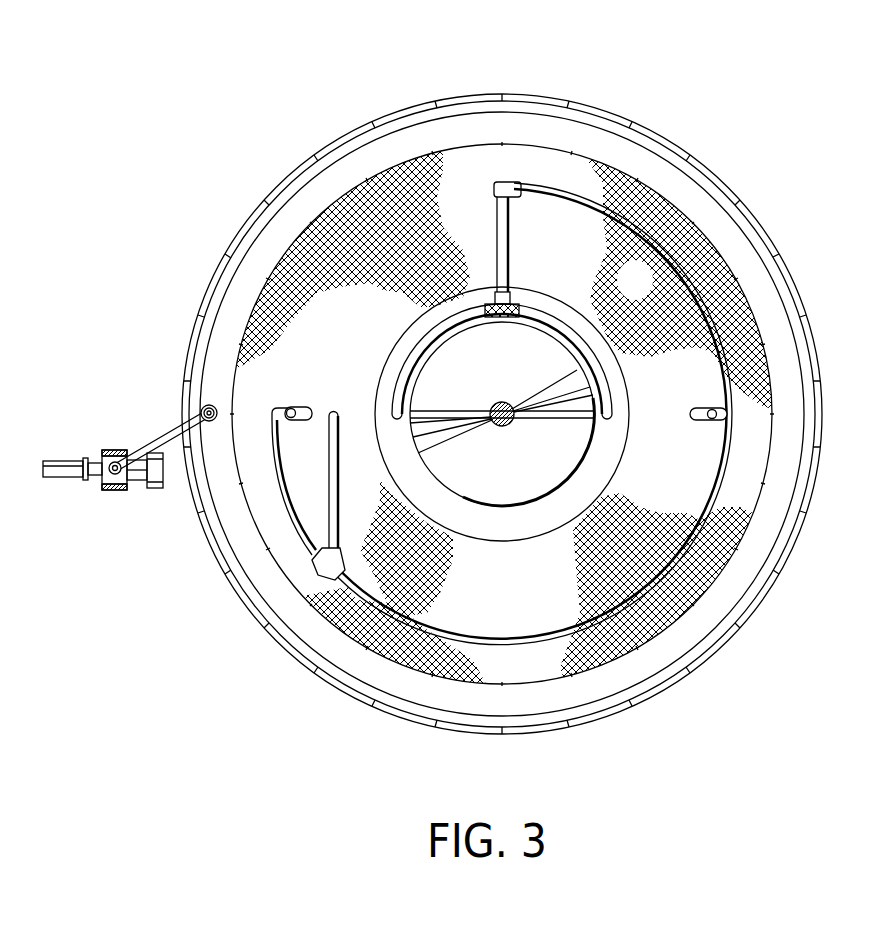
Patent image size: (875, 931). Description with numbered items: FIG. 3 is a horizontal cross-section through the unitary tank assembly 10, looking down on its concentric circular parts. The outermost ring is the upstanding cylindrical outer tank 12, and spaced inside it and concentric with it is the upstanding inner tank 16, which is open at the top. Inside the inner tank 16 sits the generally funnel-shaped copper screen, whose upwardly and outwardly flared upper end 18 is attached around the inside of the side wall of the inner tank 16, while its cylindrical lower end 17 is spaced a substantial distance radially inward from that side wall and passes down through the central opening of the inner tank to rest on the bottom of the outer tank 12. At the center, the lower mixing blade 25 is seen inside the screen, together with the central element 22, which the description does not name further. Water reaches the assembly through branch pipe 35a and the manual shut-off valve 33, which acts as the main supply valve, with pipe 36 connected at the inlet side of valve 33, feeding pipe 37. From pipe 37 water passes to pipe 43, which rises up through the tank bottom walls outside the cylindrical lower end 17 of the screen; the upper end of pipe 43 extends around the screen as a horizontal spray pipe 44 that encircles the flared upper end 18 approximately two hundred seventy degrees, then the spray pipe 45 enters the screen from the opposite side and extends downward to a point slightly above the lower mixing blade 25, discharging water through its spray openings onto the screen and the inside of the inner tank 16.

The unitary tank assembly 10 is at (502, 414).
The outer tank 12 is at (502, 414).
The inner tank 16 is at (495, 145).
The cylindrical lower end of screen 17 is at (522, 542).
The flared upper end of screen 18 is at (412, 271).
The shaft 22 is at (494, 402).
The lower mixing blade 25 is at (520, 466).
The manual shut-off valve 33 is at (100, 480).
The branch pipe 35a is at (117, 450).
The pipe 36 is at (172, 447).
The pipe 37 is at (209, 404).
The pipe 43 is at (333, 409).
The horizontal spray pipe 44 is at (548, 183).
The spray pipe 45 is at (299, 407).